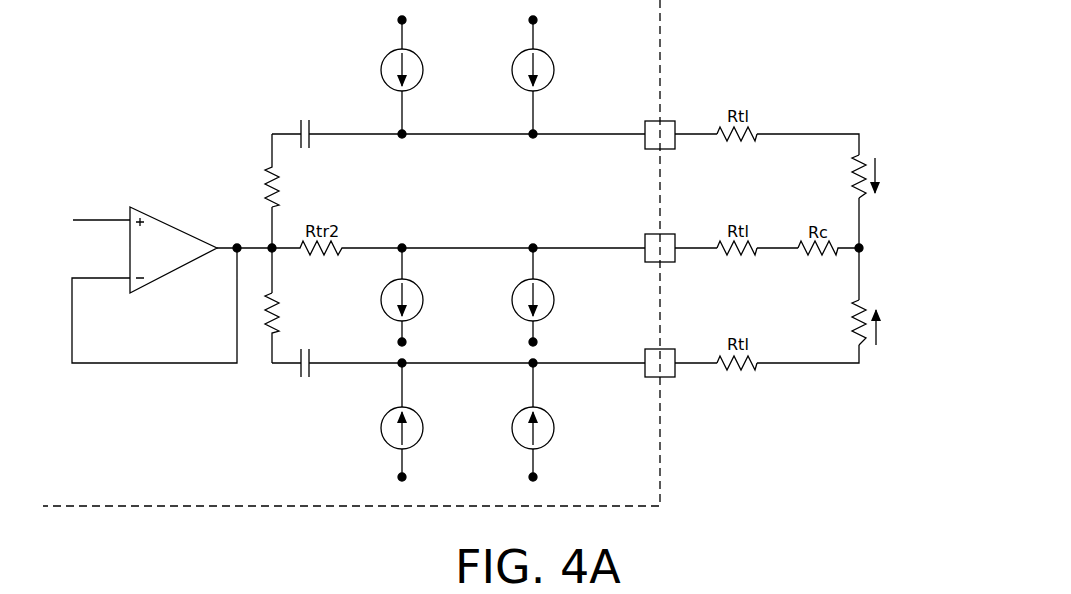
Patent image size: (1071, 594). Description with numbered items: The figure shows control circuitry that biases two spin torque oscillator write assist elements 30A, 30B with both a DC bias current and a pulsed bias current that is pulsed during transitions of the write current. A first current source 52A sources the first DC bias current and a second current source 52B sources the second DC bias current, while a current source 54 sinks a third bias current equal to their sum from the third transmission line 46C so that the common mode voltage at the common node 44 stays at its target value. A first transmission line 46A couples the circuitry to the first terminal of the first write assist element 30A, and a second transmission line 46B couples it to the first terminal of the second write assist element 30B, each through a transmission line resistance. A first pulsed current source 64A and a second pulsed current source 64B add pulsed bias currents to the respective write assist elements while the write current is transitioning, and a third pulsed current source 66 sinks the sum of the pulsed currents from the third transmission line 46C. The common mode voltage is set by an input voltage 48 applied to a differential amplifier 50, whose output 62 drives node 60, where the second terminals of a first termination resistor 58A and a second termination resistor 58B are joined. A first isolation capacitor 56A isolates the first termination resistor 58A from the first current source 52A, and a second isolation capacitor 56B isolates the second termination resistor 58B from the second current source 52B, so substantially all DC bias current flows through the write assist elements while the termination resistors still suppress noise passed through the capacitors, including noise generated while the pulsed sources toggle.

The first write assist element 30A is at (846, 158).
The second write assist element 30B is at (848, 343).
The common node 44 is at (851, 256).
The first transmission line 46A is at (693, 134).
The second transmission line 46B is at (693, 363).
The third transmission line 46C is at (693, 248).
The input voltage Vivc 48 is at (89, 219).
The differential amplifier 50 is at (173, 226).
The first current source 52A is at (427, 83).
The second current source 52B is at (427, 442).
The current source 54 is at (383, 318).
The first isolation capacitor 56A is at (296, 129).
The second isolation capacitor 56B is at (317, 373).
The first termination resistor Rtr1 58A is at (262, 168).
The second termination resistor Rtr1 58B is at (265, 334).
The node 60 is at (279, 253).
The output of the amplifier 62 is at (221, 245).
The first pulsed current source 64A is at (551, 88).
The second pulsed current source 64B is at (549, 443).
The third pulsed current source 66 is at (513, 318).